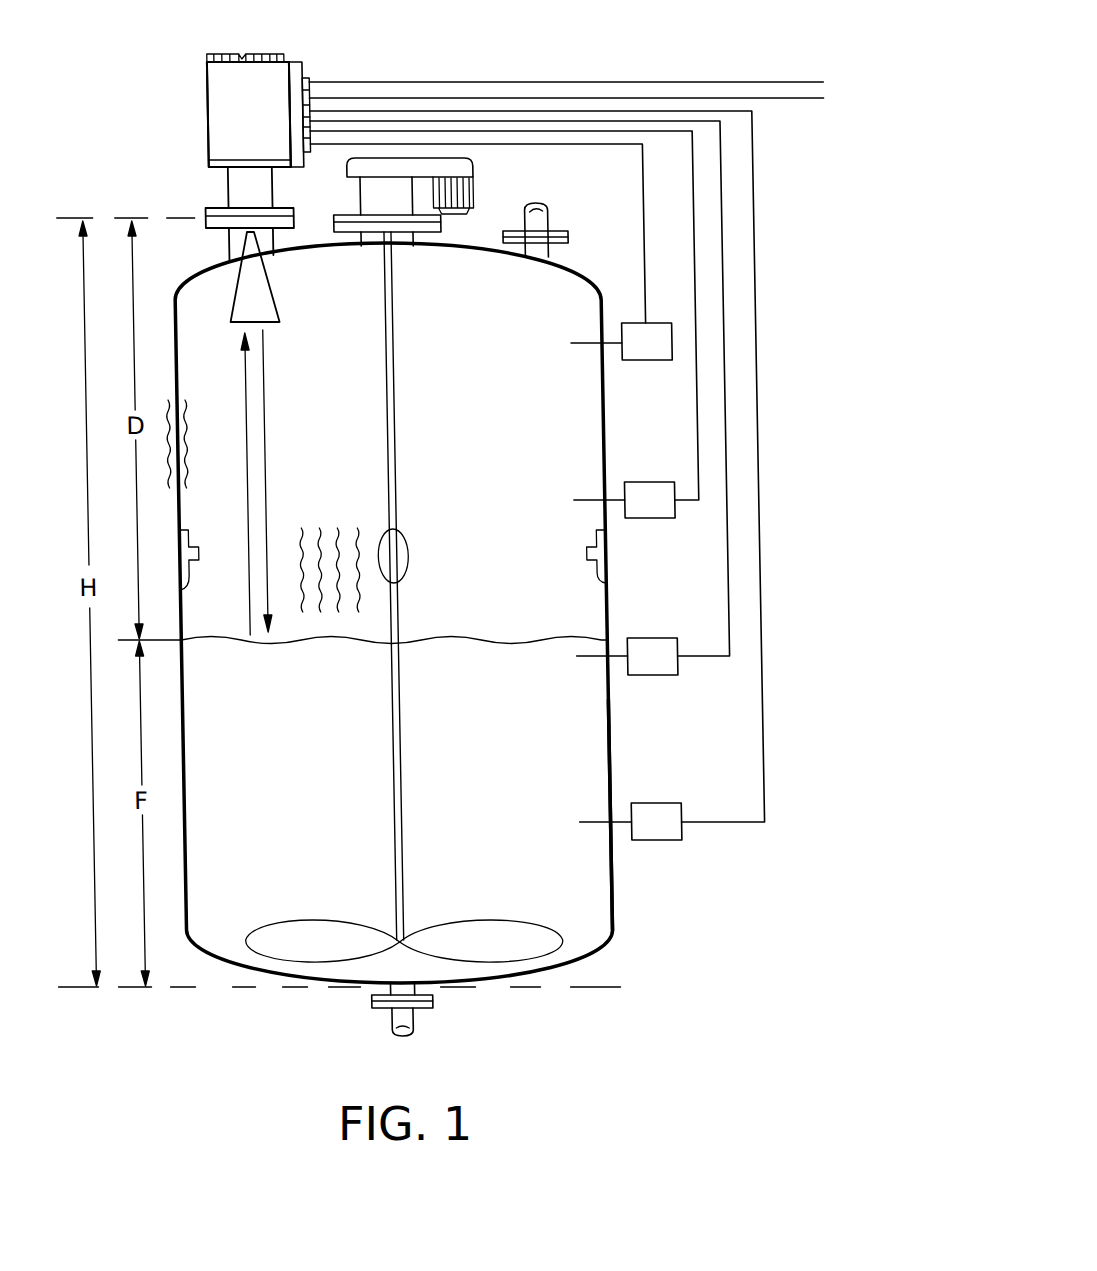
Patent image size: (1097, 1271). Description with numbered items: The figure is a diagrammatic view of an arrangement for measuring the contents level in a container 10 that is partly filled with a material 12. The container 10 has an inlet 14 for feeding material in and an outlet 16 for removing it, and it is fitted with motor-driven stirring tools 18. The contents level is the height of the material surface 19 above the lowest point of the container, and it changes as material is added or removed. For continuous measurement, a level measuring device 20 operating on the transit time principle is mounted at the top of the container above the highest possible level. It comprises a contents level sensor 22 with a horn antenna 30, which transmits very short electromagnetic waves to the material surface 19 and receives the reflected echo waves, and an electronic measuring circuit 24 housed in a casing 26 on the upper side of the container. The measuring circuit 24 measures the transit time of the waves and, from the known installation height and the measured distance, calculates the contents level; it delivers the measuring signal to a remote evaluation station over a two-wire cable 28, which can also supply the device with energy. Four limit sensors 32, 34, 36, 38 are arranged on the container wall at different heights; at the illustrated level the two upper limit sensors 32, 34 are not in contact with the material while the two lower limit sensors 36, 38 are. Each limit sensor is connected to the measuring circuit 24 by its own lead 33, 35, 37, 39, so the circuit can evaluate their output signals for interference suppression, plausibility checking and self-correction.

The container 10 is at (603, 920).
The material 12 is at (594, 860).
The inlet 14 is at (540, 220).
The outlet 16 is at (387, 1022).
The motor-driven stirring tools 18 is at (501, 945).
The material surface 19 is at (493, 633).
The level measuring device 20 is at (223, 165).
The contents level sensor 22 is at (236, 179).
The electronic measuring circuit 24 is at (249, 114).
The casing 26 is at (205, 88).
The two-wire cable 28 is at (790, 90).
The horn antenna 30 is at (258, 297).
The limit sensor 32 is at (650, 345).
The lead 33 is at (646, 262).
The limit sensor 34 is at (650, 507).
The lead 35 is at (697, 448).
The limit sensor 36 is at (655, 660).
The lead 37 is at (724, 602).
The limit sensor 38 is at (648, 820).
The lead 39 is at (756, 775).